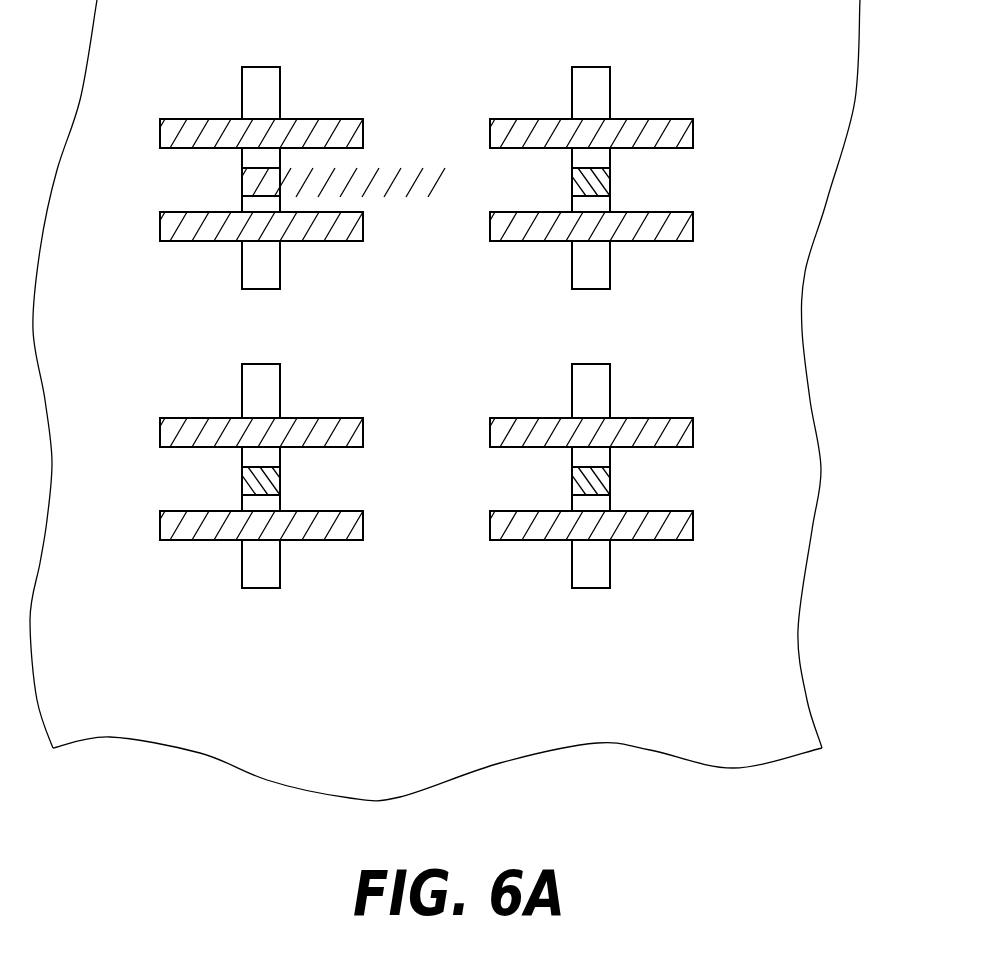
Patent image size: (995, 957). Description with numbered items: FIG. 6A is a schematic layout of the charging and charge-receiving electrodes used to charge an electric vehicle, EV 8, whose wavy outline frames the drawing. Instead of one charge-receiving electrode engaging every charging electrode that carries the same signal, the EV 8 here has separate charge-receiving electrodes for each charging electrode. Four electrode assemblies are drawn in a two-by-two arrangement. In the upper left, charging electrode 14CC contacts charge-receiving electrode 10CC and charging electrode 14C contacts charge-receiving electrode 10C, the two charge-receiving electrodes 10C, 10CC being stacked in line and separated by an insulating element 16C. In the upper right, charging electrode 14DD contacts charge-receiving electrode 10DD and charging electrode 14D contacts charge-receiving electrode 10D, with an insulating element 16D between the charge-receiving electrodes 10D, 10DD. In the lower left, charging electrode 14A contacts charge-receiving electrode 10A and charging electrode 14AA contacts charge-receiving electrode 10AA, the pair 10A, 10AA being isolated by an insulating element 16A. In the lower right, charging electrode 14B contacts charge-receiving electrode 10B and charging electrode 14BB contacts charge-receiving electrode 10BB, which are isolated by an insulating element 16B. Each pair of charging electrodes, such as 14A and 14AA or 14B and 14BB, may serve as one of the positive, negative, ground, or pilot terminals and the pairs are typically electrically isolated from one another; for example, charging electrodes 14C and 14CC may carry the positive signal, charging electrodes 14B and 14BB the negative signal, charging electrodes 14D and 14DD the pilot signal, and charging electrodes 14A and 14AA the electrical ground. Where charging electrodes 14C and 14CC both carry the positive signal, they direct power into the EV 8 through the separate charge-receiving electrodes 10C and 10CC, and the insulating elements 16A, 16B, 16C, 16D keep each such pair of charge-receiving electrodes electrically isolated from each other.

The EV 8 is at (805, 272).
The charge-receiving electrode 10A is at (280, 377).
The charge-receiving electrode 10AA is at (280, 570).
The charge-receiving electrode 10B is at (610, 377).
The charge-receiving electrode 10BB is at (610, 570).
The charge-receiving electrode 10C is at (280, 273).
The charge-receiving electrode 10CC is at (280, 79).
The charge-receiving electrode 10D is at (610, 273).
The charge-receiving electrode 10DD is at (610, 79).
The charging electrode 14A is at (160, 430).
The charging electrode 14AA is at (160, 520).
The charging electrode 14B is at (490, 430).
The charging electrode 14BB is at (490, 520).
The charging electrode 14C is at (160, 222).
The charging electrode 14CC is at (160, 130).
The charging electrode 14D is at (490, 222).
The charging electrode 14DD is at (490, 130).
The insulating element 16A is at (280, 482).
The insulating element 16B is at (610, 482).
The insulating element 16C is at (280, 183).
The insulating element 16D is at (610, 183).